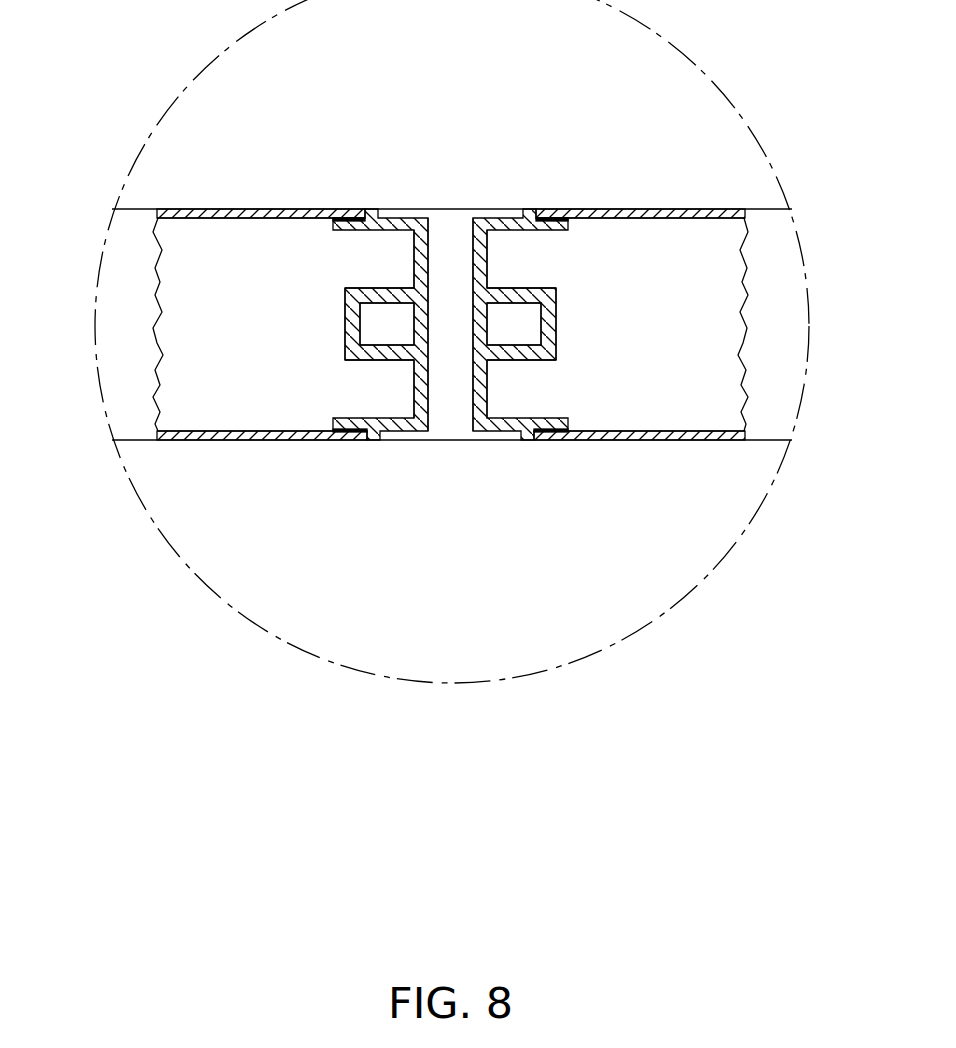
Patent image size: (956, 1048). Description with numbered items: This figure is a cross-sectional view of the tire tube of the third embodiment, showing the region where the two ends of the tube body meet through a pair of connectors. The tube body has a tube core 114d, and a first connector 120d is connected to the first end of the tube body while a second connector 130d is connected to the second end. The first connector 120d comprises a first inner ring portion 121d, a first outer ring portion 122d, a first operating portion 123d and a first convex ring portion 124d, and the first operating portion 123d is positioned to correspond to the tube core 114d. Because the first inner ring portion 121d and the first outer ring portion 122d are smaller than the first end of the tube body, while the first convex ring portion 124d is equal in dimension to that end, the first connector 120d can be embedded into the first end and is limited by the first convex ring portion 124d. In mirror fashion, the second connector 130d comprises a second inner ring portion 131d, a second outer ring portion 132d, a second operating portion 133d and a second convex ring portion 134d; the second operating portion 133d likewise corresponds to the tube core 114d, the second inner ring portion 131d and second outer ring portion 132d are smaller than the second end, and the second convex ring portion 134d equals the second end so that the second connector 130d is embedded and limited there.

The tube core 114d is at (157, 318).
The first connector 120d is at (391, 194).
The first inner ring portion 121d is at (333, 224).
The first outer ring portion 122d is at (418, 434).
The first operating portion 123d is at (344, 323).
The first convex ring portion 124d is at (372, 442).
The second connector 130d is at (520, 194).
The second inner ring portion 131d is at (563, 224).
The second outer ring portion 132d is at (484, 433).
The second operating portion 133d is at (552, 326).
The second convex ring portion 134d is at (527, 441).